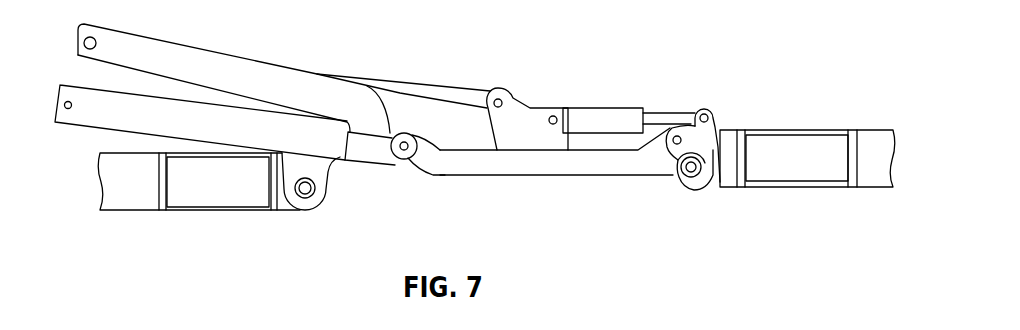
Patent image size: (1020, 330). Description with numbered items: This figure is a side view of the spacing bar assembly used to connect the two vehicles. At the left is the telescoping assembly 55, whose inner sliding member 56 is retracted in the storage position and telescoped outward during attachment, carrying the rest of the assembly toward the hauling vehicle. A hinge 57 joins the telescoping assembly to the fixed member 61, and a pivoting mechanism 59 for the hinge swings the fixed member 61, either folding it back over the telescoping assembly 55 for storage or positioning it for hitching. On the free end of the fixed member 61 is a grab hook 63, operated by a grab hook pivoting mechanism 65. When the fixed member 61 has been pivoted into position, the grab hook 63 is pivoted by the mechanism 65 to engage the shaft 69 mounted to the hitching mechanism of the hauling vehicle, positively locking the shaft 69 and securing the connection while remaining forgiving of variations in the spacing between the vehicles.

The telescoping assembly 55 is at (80, 85).
The sliding member 56 is at (368, 163).
The hinge 57 is at (437, 185).
The pivoting mechanism 59 is at (202, 47).
The fixed member 61 is at (612, 178).
The grab hook 63 is at (713, 125).
The grab hook pivoting mechanism 65 is at (620, 108).
The shaft 69 is at (697, 188).